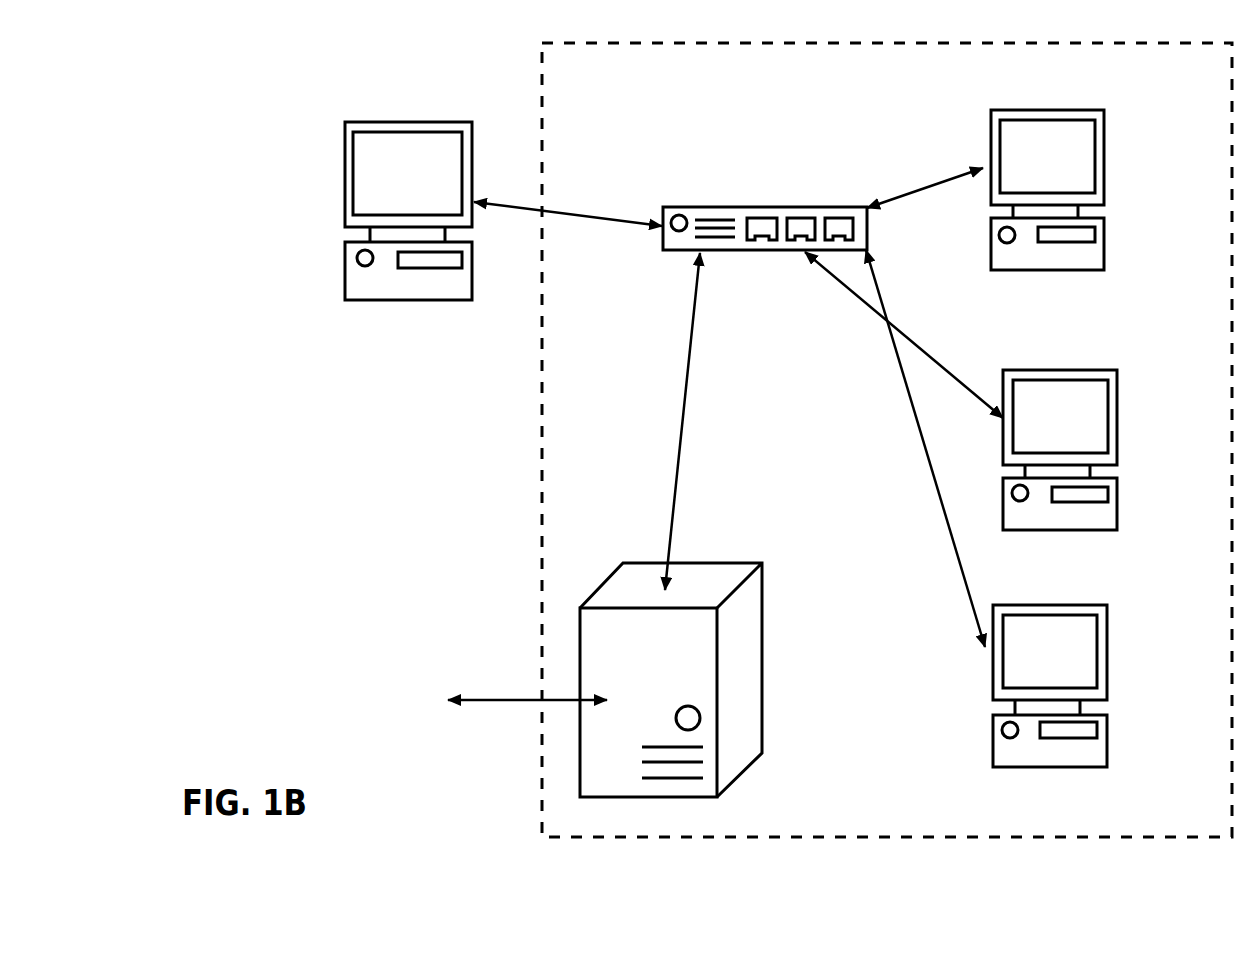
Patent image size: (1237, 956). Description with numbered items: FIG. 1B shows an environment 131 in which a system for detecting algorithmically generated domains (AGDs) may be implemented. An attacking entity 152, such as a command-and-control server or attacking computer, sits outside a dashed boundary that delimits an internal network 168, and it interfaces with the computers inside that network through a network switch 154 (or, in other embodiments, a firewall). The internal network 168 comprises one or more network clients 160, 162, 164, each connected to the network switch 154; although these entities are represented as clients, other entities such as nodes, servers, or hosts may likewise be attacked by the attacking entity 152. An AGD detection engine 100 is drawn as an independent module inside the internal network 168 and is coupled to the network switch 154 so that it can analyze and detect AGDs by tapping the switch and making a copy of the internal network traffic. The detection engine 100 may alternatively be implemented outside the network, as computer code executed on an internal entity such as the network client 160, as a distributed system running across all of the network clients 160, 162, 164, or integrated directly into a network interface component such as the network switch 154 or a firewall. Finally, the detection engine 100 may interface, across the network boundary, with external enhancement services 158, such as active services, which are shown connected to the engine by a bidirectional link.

The AGD detection engine 100 is at (671, 680).
The environment 131 is at (360, 512).
The attacking entity 152 is at (408, 226).
The network switch 154 is at (765, 214).
The external enhancement services 158 is at (475, 701).
The network client 160 is at (1047, 165).
The network client 162 is at (1060, 424).
The network client 164 is at (1050, 661).
The internal network 168 is at (887, 440).